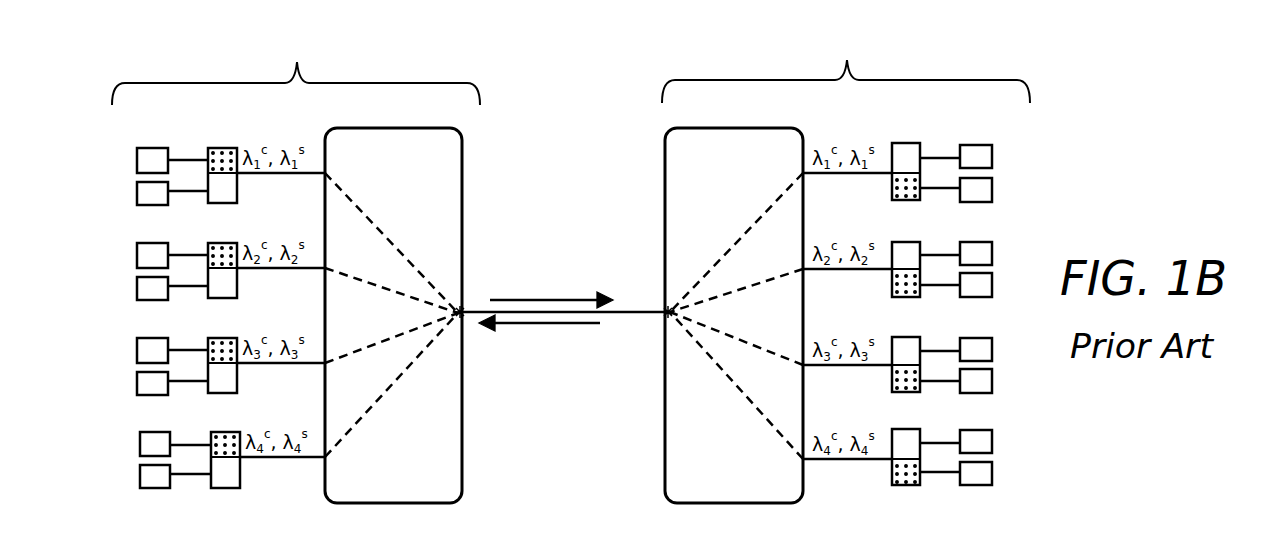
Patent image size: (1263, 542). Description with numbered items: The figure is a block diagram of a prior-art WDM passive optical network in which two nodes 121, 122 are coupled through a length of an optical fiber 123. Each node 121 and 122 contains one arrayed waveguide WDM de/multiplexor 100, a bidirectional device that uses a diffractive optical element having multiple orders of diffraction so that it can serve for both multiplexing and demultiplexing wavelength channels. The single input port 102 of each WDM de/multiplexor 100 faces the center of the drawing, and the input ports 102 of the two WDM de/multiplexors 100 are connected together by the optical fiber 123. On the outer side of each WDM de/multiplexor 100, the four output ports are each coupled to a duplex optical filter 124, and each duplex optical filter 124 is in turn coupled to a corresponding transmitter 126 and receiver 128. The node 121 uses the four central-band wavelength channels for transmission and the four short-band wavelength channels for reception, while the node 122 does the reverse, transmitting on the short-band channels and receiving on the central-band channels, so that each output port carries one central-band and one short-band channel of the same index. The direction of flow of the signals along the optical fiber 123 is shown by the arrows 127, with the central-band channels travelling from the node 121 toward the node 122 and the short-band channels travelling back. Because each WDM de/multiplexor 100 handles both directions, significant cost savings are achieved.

The WDM de/multiplexor 100 is at (421, 486).
The input port 102 is at (665, 312).
The node 121 is at (296, 67).
The node 122 is at (846, 64).
The optical fiber 123 is at (622, 315).
The duplex optical filter 124 is at (237, 183).
The transmitter 126 is at (137, 183).
The arrows 127 is at (550, 300).
The receiver 128 is at (137, 158).